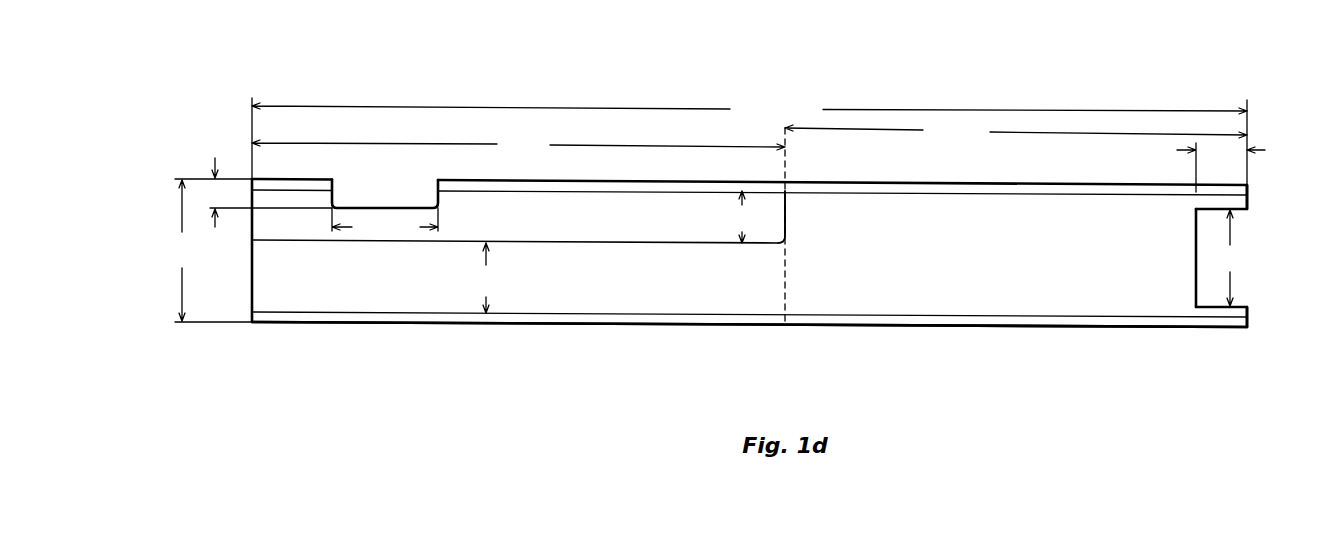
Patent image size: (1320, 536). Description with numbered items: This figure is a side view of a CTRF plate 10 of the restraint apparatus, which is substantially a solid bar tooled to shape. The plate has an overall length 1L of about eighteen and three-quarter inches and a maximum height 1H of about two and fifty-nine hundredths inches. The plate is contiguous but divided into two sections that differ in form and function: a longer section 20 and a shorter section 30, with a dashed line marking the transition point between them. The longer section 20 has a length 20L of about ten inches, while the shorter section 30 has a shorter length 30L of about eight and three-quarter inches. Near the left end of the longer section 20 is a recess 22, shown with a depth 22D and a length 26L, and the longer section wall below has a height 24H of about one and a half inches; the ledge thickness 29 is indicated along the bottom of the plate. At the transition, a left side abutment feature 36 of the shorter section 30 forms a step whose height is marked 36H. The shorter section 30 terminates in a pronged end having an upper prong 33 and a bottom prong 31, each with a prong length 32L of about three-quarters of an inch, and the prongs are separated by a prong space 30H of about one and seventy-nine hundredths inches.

The CTRF plate 10 is at (163, 117).
The longer section 20 is at (597, 293).
The groove 22 is at (380, 182).
The ledge thickness 29 is at (420, 311).
The shorter section 30 is at (993, 274).
The bottom prong 31 is at (1250, 324).
The upper prong 33 is at (1264, 205).
The left side abutment feature 36 is at (794, 218).
The overall length 1L is at (749, 140).
The length of longer section 20L is at (518, 147).
The length of shorter section 30L is at (1016, 140).
The prong length 32L is at (1221, 166).
The groove length 26L is at (385, 222).
The groove depth 22D is at (253, 181).
The maximum height 1H is at (208, 251).
The step height 36H is at (747, 217).
The height of longer section wall 24H is at (492, 278).
The prong space 30H is at (1235, 258).